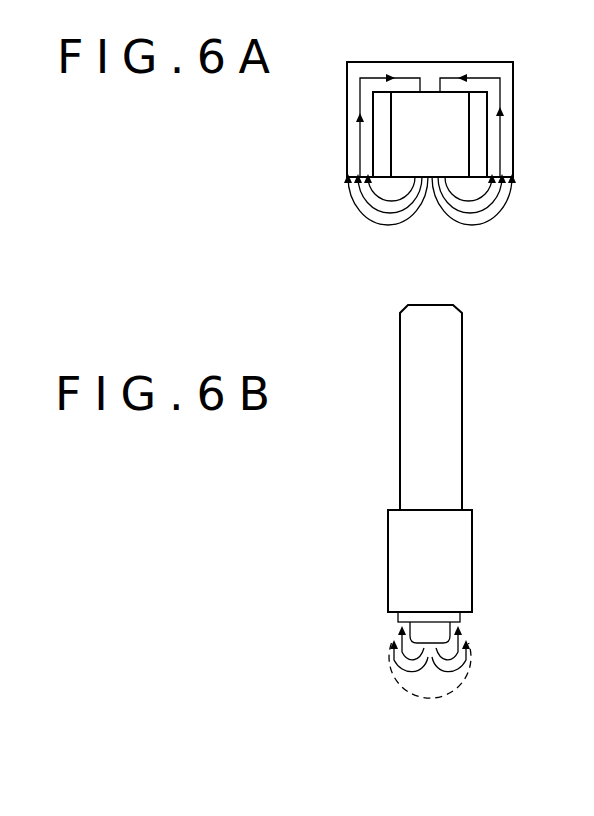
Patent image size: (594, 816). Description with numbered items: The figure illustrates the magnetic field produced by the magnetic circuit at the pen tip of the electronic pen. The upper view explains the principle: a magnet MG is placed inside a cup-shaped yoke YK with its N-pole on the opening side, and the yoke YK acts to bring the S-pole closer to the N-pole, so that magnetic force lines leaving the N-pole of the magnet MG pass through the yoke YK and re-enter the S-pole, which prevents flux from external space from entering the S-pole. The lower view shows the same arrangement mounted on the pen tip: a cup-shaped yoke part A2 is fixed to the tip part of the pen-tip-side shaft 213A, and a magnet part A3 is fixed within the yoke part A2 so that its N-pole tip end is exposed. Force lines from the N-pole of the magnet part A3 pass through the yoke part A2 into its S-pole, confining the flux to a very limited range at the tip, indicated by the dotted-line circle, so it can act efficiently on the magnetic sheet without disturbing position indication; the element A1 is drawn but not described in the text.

In FIG. 6A, the yoke YK is at (513, 88).
In FIG. 6A, the magnet MG is at (397, 124).
In FIG. 6B, the pen-tip-side shaft 213A is at (362, 502).
In FIG. 6B, the shaft A1 is at (462, 375).
In FIG. 6B, the yoke part A2 is at (460, 617).
In FIG. 6B, the magnet part A3 is at (430, 637).